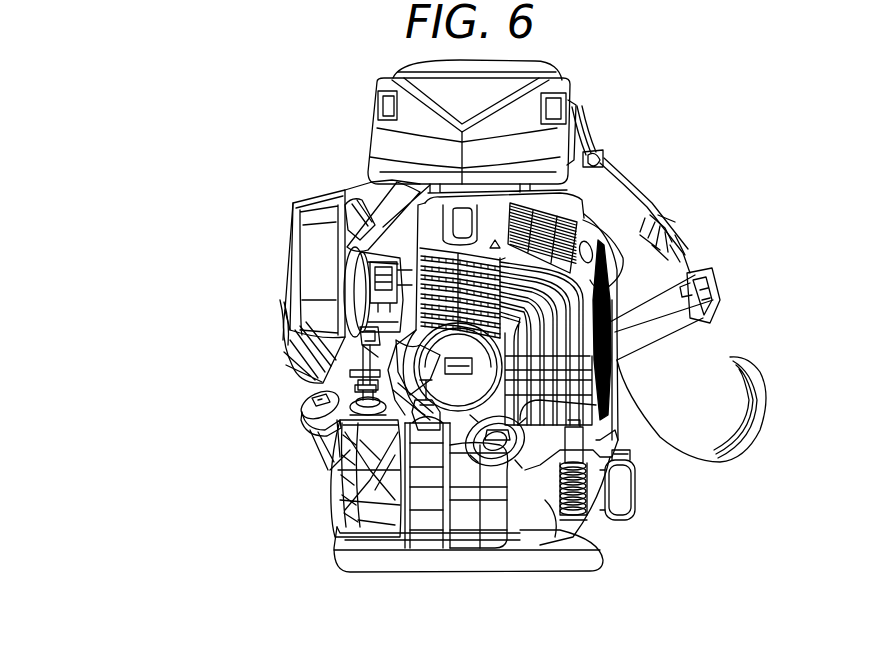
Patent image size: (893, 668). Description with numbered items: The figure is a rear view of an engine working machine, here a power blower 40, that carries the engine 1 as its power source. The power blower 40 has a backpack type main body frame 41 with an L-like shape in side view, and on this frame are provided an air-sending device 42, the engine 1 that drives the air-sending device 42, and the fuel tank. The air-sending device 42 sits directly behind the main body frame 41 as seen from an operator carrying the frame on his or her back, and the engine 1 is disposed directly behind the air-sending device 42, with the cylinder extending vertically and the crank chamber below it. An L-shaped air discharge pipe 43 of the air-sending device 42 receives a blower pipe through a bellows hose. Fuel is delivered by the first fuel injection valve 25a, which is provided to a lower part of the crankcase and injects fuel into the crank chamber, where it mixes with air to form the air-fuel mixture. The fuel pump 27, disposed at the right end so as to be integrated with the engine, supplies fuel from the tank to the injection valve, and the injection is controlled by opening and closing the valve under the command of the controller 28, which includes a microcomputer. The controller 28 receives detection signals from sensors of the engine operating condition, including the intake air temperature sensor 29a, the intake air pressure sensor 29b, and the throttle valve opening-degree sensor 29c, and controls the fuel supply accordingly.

The engine 1 is at (397, 347).
The power blower 40 is at (688, 265).
The main body frame 41 is at (588, 128).
The air-sending device 42 is at (377, 227).
The air discharge pipe 43 is at (712, 387).
The controller 28 is at (635, 485).
The fuel pump 27 is at (520, 443).
The first fuel injection valve 25a is at (432, 411).
The intake air temperature sensor 29a is at (214, 235).
The intake air pressure sensor 29b is at (361, 294).
The throttle valve opening-degree sensor 29c is at (369, 329).